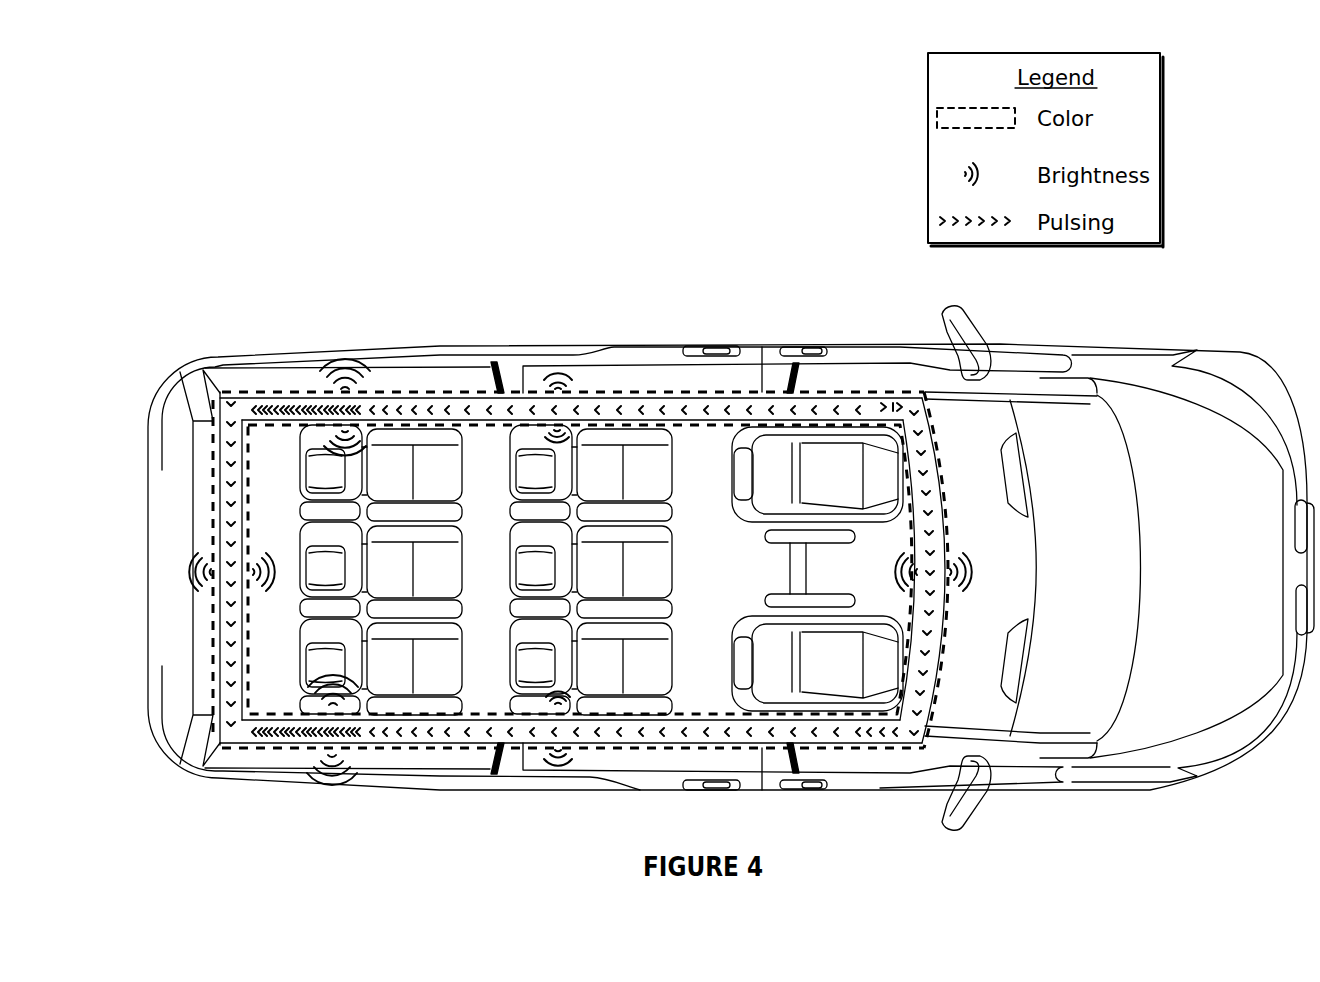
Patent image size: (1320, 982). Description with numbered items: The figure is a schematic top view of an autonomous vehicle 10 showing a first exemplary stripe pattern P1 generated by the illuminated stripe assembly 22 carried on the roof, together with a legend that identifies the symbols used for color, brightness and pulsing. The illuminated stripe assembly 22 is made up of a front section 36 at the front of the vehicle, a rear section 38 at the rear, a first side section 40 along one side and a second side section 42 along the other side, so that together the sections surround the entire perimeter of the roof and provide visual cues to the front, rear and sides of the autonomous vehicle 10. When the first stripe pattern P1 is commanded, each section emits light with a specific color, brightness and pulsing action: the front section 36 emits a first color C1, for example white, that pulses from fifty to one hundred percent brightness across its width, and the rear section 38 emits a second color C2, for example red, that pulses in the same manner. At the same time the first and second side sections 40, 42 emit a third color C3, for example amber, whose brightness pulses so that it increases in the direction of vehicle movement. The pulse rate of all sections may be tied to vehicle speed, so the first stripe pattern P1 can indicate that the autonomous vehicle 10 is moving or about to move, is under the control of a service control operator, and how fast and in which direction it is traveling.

The autonomous vehicle 10 is at (143, 271).
The illuminated stripe assembly 22 is at (848, 391).
The front section 36 is at (945, 543).
The rear section 38 is at (210, 648).
The first side section 40 is at (658, 397).
The second side section 42 is at (647, 741).
The first color C1 is at (942, 453).
The second color C2 is at (208, 462).
The third color C3 is at (421, 392).
The first stripe pattern P1 is at (935, 344).